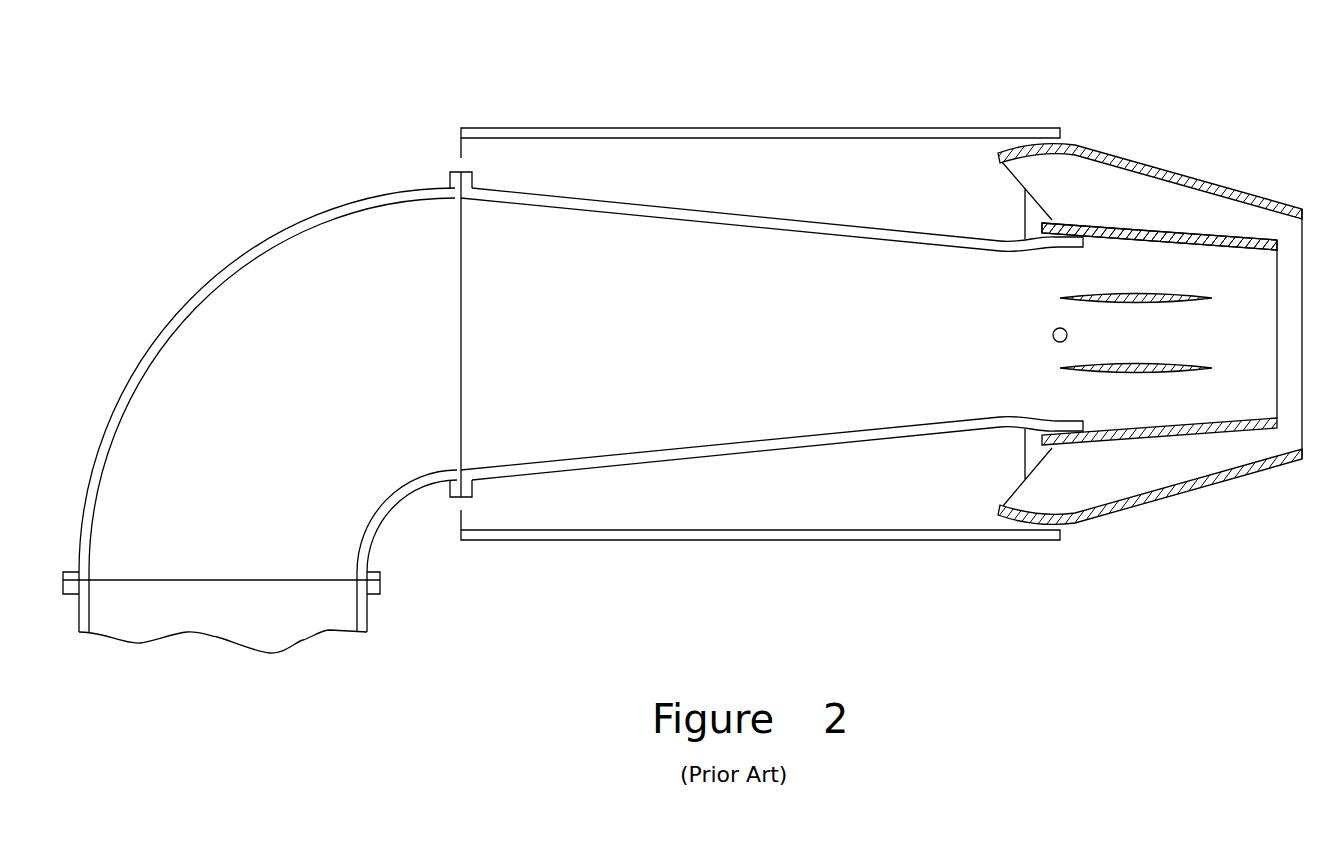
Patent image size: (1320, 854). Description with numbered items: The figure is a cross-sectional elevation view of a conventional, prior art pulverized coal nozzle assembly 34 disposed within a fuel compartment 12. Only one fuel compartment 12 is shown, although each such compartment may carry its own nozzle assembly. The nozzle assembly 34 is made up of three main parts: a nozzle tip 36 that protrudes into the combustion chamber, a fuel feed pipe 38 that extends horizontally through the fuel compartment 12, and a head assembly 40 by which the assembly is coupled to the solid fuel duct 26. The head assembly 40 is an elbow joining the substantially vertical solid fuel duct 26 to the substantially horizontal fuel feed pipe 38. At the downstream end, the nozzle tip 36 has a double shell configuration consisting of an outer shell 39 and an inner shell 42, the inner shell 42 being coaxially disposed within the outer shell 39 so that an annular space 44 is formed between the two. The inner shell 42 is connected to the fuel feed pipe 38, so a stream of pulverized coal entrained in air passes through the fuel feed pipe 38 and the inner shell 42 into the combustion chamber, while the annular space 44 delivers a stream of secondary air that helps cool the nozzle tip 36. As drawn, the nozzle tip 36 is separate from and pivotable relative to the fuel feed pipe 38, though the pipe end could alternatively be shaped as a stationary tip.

The fuel compartment 12 is at (852, 128).
The solid fuel duct 26 is at (368, 612).
The nozzle assembly 34 is at (1044, 267).
The nozzle tip 36 is at (1093, 146).
The fuel feed pipe 38 is at (852, 228).
The outer shell 39 is at (1233, 188).
The head assembly 40 is at (288, 229).
The inner shell 42 is at (1110, 223).
The annular space 44 is at (1168, 208).